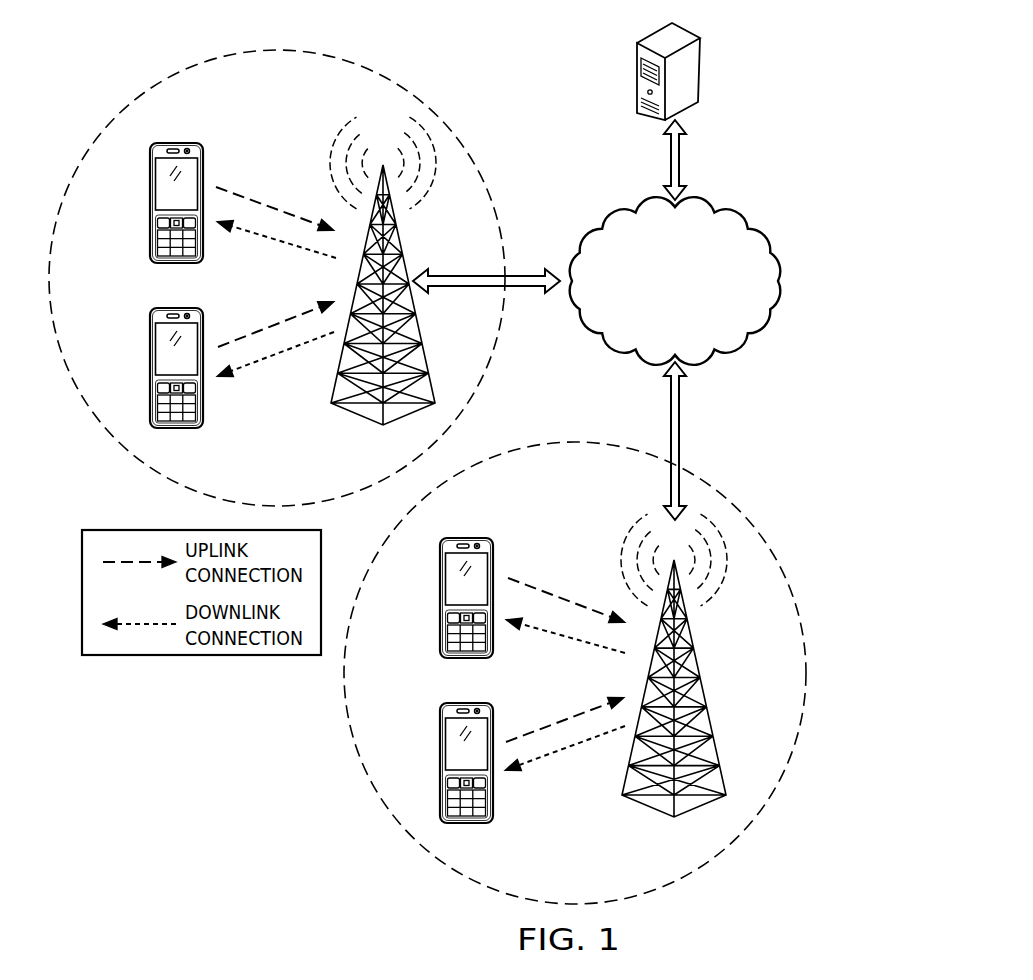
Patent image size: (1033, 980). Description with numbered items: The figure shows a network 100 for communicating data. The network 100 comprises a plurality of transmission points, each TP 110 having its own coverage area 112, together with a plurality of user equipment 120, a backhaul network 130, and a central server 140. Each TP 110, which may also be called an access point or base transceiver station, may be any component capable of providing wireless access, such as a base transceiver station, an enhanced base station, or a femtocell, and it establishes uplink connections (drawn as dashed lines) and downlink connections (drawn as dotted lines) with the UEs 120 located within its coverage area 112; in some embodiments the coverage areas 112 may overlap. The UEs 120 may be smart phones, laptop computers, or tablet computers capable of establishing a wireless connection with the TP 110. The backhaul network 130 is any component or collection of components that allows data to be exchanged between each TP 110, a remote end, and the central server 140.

The network 100 is at (124, 59).
The TP 110 is at (405, 268).
The coverage area 112 is at (300, 112).
The user equipment 120 is at (150, 203).
The backhaul network 130 is at (696, 323).
The central server 140 is at (700, 68).